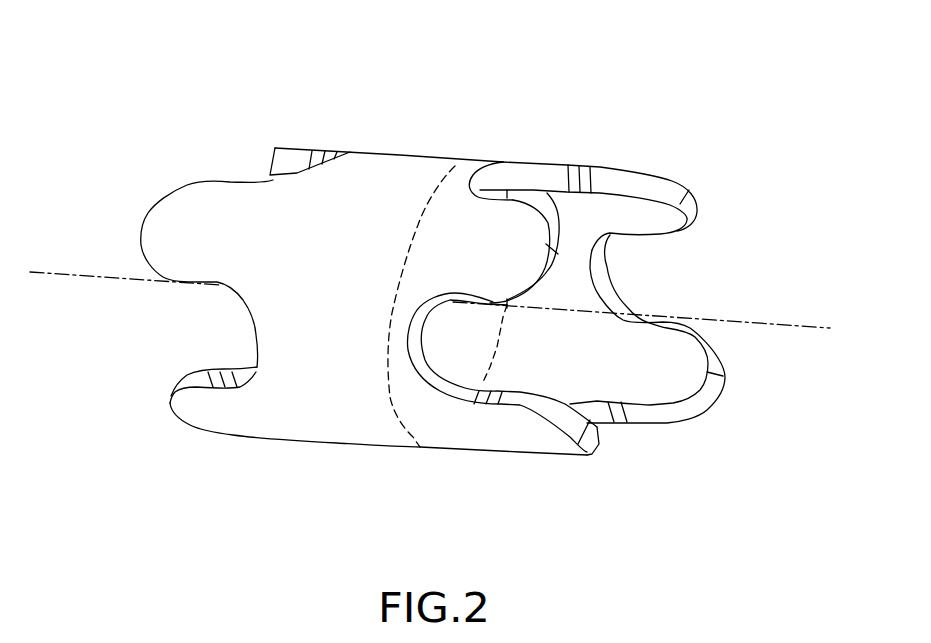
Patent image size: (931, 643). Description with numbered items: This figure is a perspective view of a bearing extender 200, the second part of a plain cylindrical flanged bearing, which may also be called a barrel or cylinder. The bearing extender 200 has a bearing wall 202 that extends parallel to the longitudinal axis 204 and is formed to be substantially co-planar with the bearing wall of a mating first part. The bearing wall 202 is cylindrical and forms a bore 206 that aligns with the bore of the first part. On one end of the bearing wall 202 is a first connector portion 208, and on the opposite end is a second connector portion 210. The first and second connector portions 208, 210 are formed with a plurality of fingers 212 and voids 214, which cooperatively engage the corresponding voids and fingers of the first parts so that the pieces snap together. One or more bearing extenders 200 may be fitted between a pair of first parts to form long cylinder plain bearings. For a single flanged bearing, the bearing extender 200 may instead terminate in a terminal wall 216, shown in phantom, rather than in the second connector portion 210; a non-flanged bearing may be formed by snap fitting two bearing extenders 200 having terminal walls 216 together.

The bearing extender 200 is at (550, 82).
The bearing wall 202 is at (337, 442).
The longitudinal axis 204 is at (790, 328).
The bore 206 is at (180, 343).
The first connector portion 208 is at (304, 148).
The second connector portion 210 is at (687, 187).
The fingers 212 is at (690, 407).
The voids 214 is at (617, 440).
The terminal wall 216 is at (437, 186).